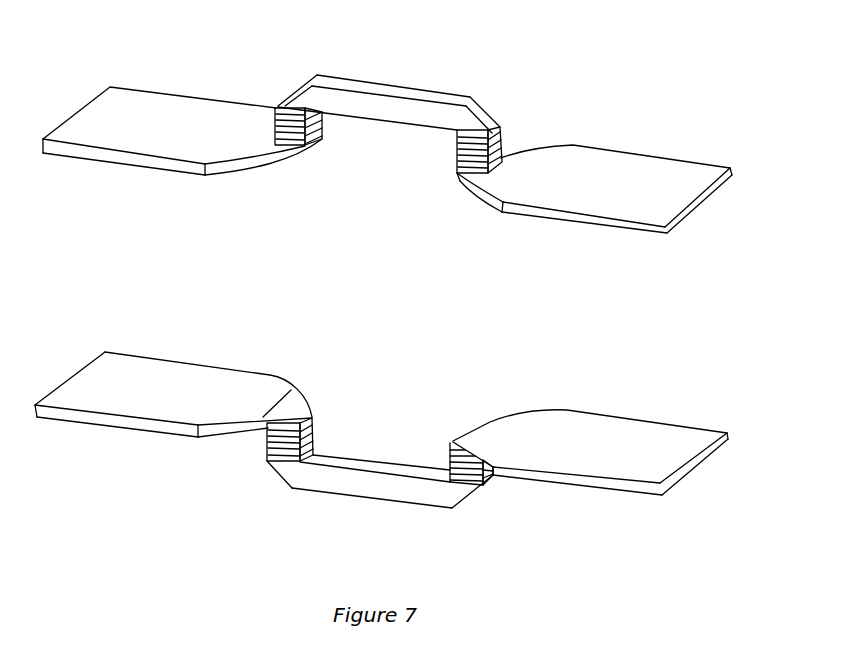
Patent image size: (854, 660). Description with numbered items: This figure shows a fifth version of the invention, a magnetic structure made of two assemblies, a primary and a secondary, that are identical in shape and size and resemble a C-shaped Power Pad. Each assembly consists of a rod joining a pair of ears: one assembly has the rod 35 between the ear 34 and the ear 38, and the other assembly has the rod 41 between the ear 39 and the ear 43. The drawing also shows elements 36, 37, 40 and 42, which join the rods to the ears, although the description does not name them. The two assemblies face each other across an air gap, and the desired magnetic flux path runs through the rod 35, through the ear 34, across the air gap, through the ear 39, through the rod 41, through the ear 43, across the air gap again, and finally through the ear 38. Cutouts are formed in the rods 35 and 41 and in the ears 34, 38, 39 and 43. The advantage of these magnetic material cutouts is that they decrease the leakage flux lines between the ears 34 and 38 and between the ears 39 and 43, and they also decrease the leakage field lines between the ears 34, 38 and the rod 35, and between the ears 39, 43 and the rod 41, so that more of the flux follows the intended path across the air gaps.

The ear 34 is at (583, 445).
The rod 35 is at (392, 485).
The second lower laminated stack 36 is at (488, 483).
The first lower laminated stack 37 is at (267, 450).
The ear 38 is at (165, 392).
The ear 39 is at (625, 180).
The second upper laminated stack 40 is at (503, 133).
The rod 41 is at (385, 87).
The first upper laminated stack 42 is at (277, 107).
The ear 43 is at (118, 117).